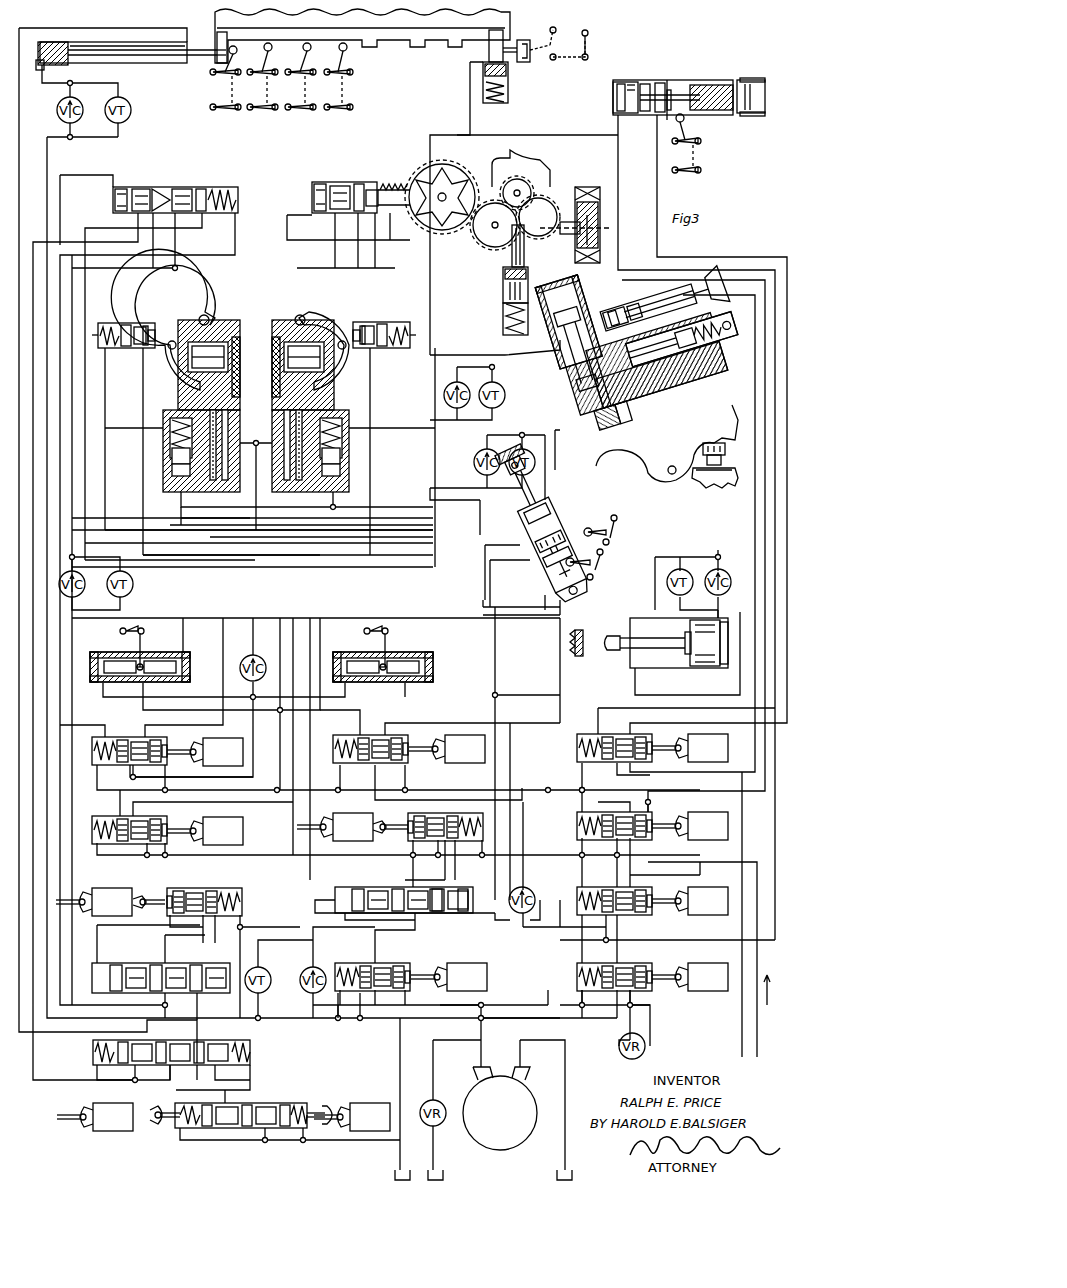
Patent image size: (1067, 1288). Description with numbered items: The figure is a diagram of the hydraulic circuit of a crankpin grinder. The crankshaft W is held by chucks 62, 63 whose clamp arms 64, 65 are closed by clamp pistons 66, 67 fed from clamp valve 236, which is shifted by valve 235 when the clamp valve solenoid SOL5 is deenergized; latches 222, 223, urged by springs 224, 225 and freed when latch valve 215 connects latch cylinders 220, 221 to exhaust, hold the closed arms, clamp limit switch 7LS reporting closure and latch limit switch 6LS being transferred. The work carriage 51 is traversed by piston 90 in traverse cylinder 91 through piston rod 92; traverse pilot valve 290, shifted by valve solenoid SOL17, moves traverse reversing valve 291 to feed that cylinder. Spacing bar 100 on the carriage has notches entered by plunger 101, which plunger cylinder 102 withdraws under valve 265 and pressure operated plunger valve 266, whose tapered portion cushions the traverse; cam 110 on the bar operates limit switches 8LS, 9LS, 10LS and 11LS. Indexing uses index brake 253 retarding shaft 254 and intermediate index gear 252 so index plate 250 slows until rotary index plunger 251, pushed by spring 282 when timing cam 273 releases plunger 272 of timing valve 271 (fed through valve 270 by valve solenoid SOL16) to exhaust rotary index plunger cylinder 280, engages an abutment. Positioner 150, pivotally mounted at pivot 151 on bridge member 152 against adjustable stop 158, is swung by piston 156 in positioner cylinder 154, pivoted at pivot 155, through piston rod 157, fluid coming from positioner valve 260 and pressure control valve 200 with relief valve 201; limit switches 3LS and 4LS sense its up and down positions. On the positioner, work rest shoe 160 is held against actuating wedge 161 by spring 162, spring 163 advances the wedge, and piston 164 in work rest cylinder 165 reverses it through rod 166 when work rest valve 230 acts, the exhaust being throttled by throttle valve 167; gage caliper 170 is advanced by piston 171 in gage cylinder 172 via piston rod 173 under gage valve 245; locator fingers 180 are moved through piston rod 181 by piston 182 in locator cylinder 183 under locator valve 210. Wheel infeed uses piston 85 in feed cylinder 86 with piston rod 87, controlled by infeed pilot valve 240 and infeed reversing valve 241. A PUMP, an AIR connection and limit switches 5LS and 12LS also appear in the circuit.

The work carriage 51 is at (213, 20).
The piston 90 is at (38, 70).
The traverse cylinder 91 is at (125, 68).
The piston rod 92 is at (168, 64).
The spacing bar 100 is at (510, 35).
The plunger 101 is at (483, 70).
The plunger cylinder 102 is at (508, 93).
The cam 110 is at (243, 59).
The positioner 150 is at (655, 458).
The pivot 151 is at (672, 478).
The bridge member 152 is at (710, 488).
The positioner cylinder 154 is at (530, 548).
The pivot 155 is at (549, 591).
The piston 156 is at (535, 530).
The piston rod 157 is at (540, 518).
The adjustable stop 158 is at (712, 458).
The work rest shoe 160 is at (677, 373).
The actuating wedge 161 is at (591, 421).
The spring 162 is at (730, 405).
The spring 163 is at (588, 432).
The piston 164 is at (563, 353).
The work rest cylinder 165 is at (568, 322).
The rod 166 is at (579, 389).
The throttle valve 167 is at (506, 396).
The gage caliper 170 is at (725, 293).
The piston 171 is at (630, 308).
The gage cylinder 172 is at (650, 296).
The piston rod 173 is at (649, 309).
The locator fingers 180 is at (722, 110).
The piston rod 181 is at (650, 88).
The piston 182 is at (628, 82).
The locator cylinder 183 is at (648, 80).
The pressure control valve 200 is at (640, 963).
The relief valve 201 is at (645, 1050).
The locator valve 210 is at (606, 734).
The latch valve 215 is at (635, 915).
The latch cylinder 220 is at (393, 322).
The latch cylinder 221 is at (103, 322).
The latch 222 is at (362, 324).
The latch 223 is at (143, 322).
The spring 224 is at (398, 348).
The spring 225 is at (115, 348).
The work rest valve 230 is at (400, 963).
The valve 235 is at (458, 862).
The clamp valve 236 is at (368, 888).
The infeed pilot valve 240 is at (207, 888).
The infeed reversing valve 241 is at (125, 963).
The gage valve 245 is at (640, 838).
The index plate 250 is at (505, 160).
The rotary index plunger 251 is at (524, 245).
The intermediate index gear 252 is at (492, 250).
The index brake 253 is at (588, 187).
The shaft 254 is at (552, 222).
The positioner valve 260 is at (365, 735).
The valve 265 is at (125, 737).
The pressure operated plunger valve 266 is at (165, 187).
The valve 270 is at (125, 843).
The timing valve 271 is at (320, 213).
The plunger 272 is at (418, 172).
The timing cam 273 is at (456, 180).
The rotary index plunger cylinder 280 is at (507, 335).
The spring 282 is at (503, 310).
The traverse pilot valve 290 is at (275, 1103).
The traverse reversing valve 291 is at (220, 1040).
The chuck 62 is at (262, 305).
The chuck 63 is at (252, 308).
The clamp arm 64 is at (310, 312).
The clamp arm 65 is at (183, 312).
The clamp piston 66 is at (275, 380).
The clamp piston 67 is at (235, 335).
The piston 85 is at (706, 670).
The feed cylinder 86 is at (635, 620).
The piston rod 87 is at (620, 656).
The crankshaft W is at (765, 100).
The limit switch 3LS is at (602, 522).
The limit switch 4LS is at (584, 571).
The limit switch 5LS is at (701, 143).
The latch limit switch 6LS is at (136, 654).
The clamp limit switch 7LS is at (384, 654).
The limit switch 8LS is at (218, 89).
The limit switch 9LS is at (266, 76).
The limit switch 10LS is at (305, 76).
The limit switch 11LS is at (352, 76).
The limit switch 12LS is at (559, 52).
The clamp valve solenoid SOL5 is at (390, 827).
The valve solenoid SOL16 is at (118, 1117).
The valve solenoid SOL17 is at (348, 1117).
The pump PUMP is at (483, 1110).
The air supply AIR is at (763, 1008).